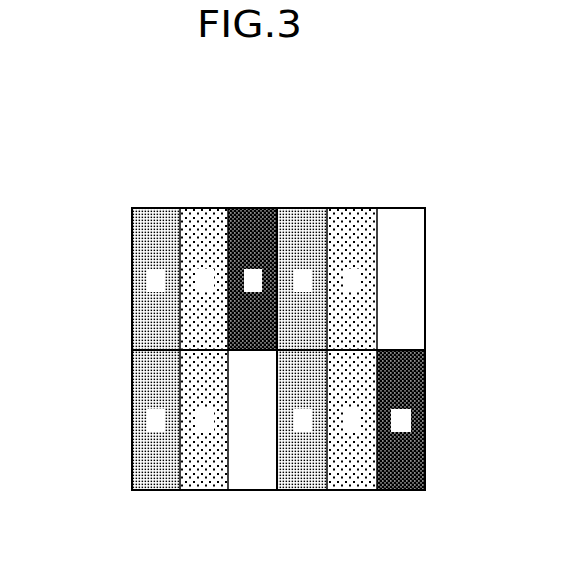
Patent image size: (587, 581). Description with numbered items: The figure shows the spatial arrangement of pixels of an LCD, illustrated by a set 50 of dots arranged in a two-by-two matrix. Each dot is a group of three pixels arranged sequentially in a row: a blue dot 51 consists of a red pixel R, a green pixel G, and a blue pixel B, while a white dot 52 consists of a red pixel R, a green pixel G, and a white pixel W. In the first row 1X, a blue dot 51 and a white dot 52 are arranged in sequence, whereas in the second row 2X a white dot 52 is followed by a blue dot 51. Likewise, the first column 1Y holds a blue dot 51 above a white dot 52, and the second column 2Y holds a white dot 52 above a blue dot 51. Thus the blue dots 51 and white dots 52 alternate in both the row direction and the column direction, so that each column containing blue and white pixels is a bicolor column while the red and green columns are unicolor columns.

The set of dots 50 is at (238, 305).
The blue dot 51 is at (277, 203).
The white dot 52 is at (425, 203).
The first row 1X is at (126, 278).
The second row 2X is at (124, 422).
The first column 1Y is at (212, 145).
The second column 2Y is at (360, 145).